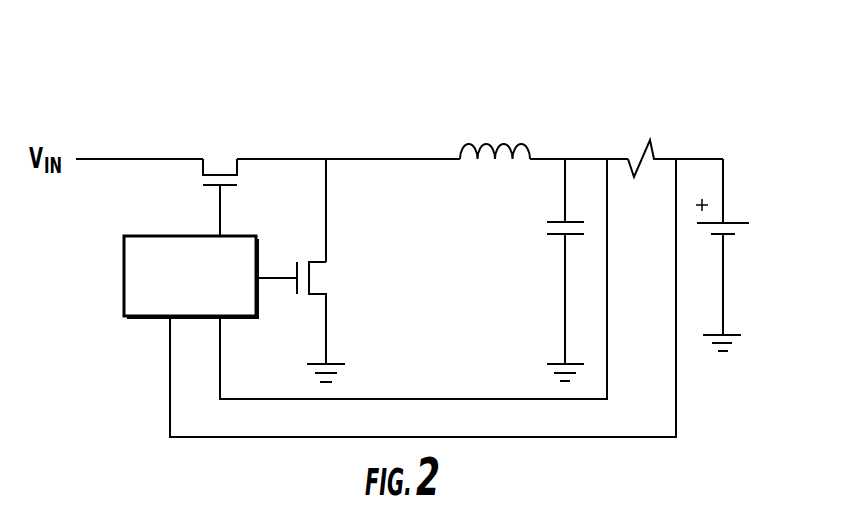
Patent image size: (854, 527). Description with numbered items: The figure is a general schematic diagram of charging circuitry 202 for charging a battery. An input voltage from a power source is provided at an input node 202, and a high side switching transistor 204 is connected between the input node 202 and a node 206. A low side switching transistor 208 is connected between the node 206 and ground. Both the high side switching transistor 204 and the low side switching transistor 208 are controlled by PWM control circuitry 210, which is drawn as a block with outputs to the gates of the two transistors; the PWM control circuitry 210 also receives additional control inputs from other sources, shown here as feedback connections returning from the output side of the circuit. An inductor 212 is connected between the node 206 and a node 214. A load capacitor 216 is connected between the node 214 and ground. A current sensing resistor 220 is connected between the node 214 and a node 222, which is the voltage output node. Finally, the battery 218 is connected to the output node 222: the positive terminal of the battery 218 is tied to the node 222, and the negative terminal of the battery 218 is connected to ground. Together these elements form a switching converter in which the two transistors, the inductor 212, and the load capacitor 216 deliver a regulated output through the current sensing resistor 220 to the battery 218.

The input node 202 is at (134, 158).
The high side switching transistor 204 is at (220, 156).
The node 206 is at (326, 158).
The low side switching transistor 208 is at (319, 281).
The PWM control circuitry 210 is at (124, 272).
The inductor 212 is at (497, 143).
The node 214 is at (566, 158).
The load capacitor 216 is at (559, 222).
The battery 218 is at (738, 223).
The current sensing resistor 220 is at (640, 166).
The node 222 is at (723, 158).